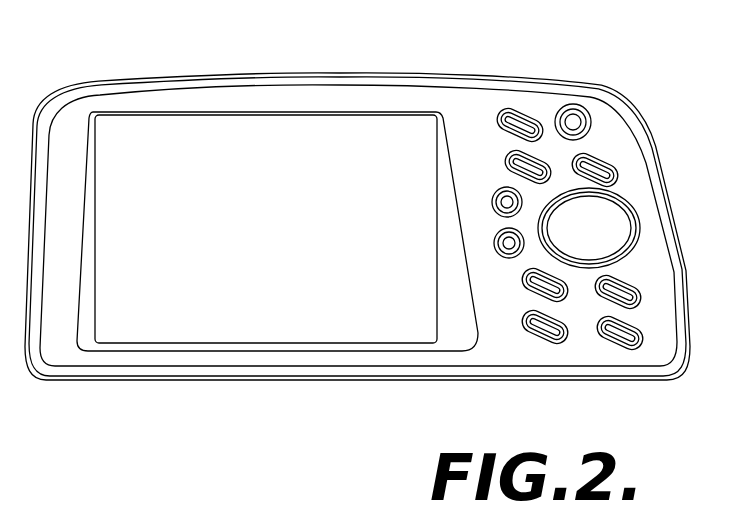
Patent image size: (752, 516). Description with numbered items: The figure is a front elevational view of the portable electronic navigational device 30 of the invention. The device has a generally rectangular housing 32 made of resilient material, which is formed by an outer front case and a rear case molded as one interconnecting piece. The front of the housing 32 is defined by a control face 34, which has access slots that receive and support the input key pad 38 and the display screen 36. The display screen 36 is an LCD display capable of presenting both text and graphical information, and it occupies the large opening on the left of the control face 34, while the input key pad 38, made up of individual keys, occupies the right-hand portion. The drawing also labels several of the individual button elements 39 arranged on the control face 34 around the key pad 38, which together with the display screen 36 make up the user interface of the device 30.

The portable electronic navigational device 30 is at (600, 43).
The housing 32 is at (182, 78).
The control face 34 is at (392, 93).
The display screen 36 is at (217, 333).
The input key pad 38 is at (622, 235).
The push buttons 39 is at (615, 163).